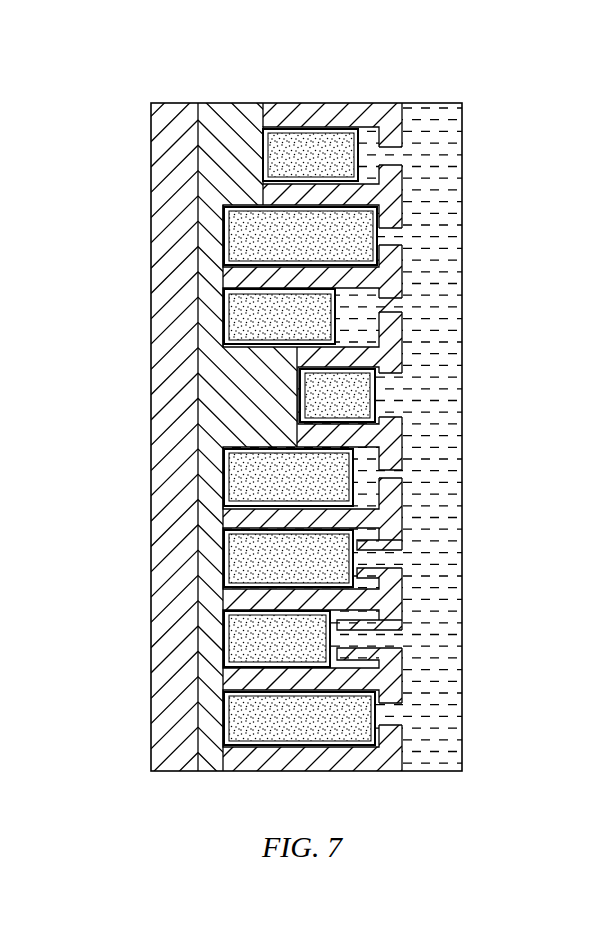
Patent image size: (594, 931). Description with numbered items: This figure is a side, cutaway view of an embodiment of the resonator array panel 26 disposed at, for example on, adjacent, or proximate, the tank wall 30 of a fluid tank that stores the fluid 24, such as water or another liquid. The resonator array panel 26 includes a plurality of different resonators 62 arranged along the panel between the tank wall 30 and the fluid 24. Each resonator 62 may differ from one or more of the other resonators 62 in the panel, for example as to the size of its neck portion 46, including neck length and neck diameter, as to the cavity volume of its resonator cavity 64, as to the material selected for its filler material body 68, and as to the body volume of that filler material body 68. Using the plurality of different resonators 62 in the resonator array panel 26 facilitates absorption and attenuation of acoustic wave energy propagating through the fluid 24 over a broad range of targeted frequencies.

The resonator array panel 26 is at (426, 81).
The tank wall 30 is at (163, 178).
The neck portion 46 is at (405, 142).
The resonator 62 is at (447, 230).
The resonator cavity 64 is at (373, 329).
The filler material body 68 is at (356, 397).
The fluid 24 is at (450, 517).